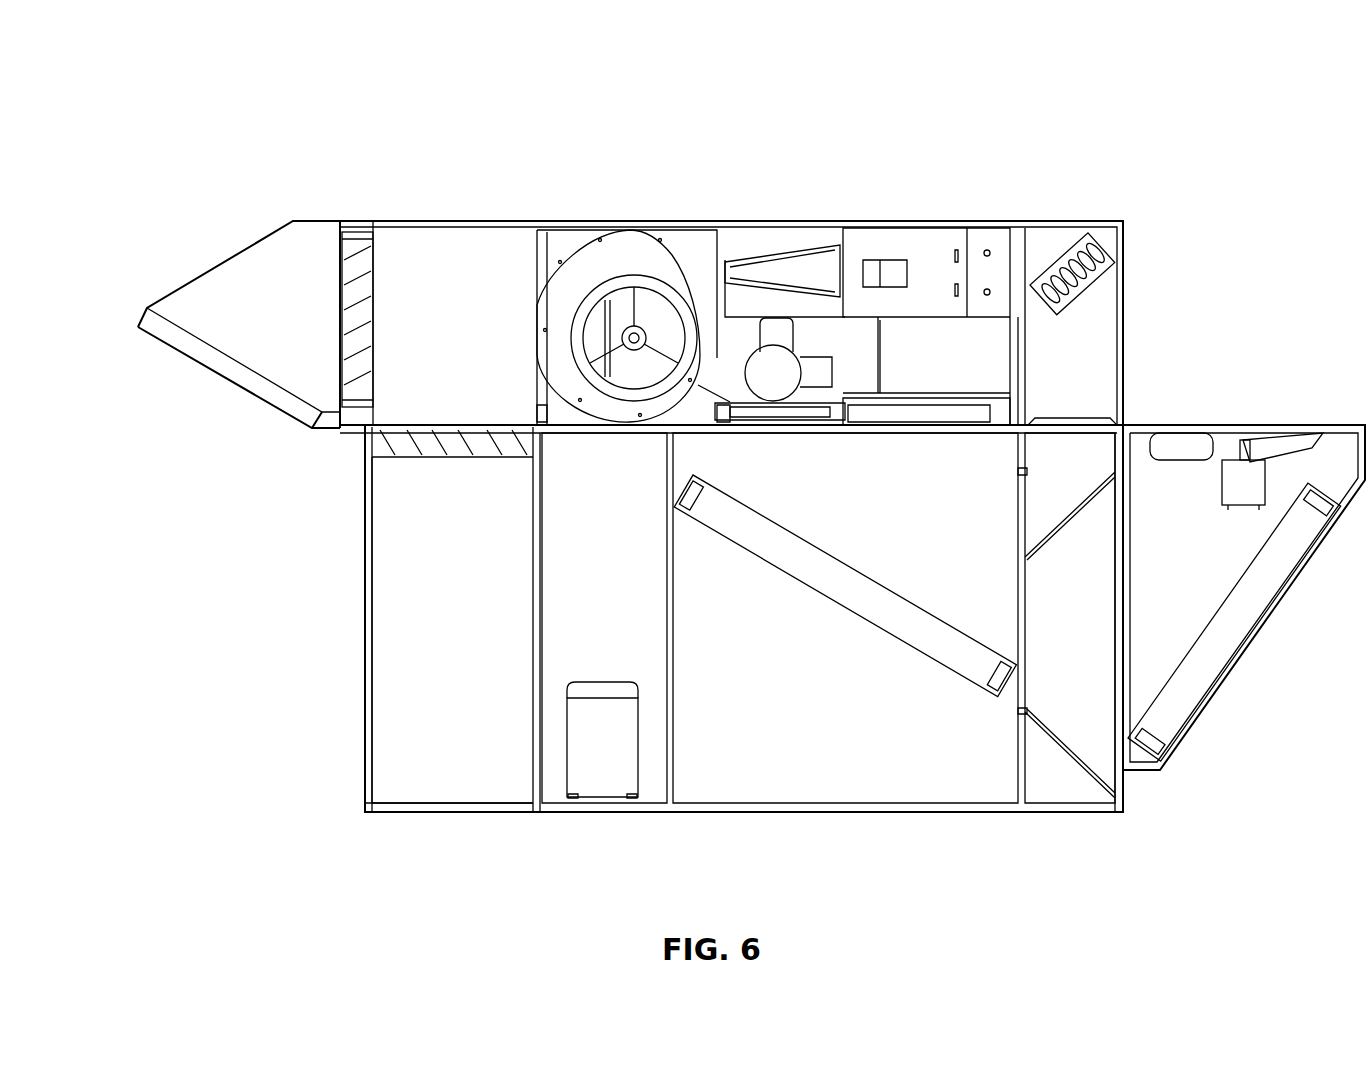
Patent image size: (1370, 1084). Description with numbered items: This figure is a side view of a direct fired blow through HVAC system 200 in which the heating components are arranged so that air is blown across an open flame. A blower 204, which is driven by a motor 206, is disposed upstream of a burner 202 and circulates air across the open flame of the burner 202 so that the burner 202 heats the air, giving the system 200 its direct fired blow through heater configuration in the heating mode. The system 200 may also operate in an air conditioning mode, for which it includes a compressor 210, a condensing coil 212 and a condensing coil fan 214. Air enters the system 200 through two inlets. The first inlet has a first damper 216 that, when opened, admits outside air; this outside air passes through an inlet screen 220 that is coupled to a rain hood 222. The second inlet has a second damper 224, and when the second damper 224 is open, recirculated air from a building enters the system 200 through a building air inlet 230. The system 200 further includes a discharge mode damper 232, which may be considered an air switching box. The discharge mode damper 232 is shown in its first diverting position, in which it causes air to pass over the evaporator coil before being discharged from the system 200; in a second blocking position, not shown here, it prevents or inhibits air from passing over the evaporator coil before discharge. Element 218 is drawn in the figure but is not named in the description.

The direct fired blow through HVAC system 200 is at (1260, 95).
The burner 202 is at (775, 272).
The blower 204 is at (637, 335).
The motor 206 is at (780, 352).
The compressor 210 is at (602, 760).
The condensing coil 212 is at (1195, 676).
The condensing coil fan 214 is at (1182, 445).
The first damper 216 is at (360, 305).
The inclined conveyor 218 is at (937, 640).
The inlet screen 220 is at (273, 387).
The rain hood 222 is at (250, 278).
The second damper 224 is at (465, 438).
The building air inlet 230 is at (455, 778).
The discharge mode damper 232 is at (1085, 775).